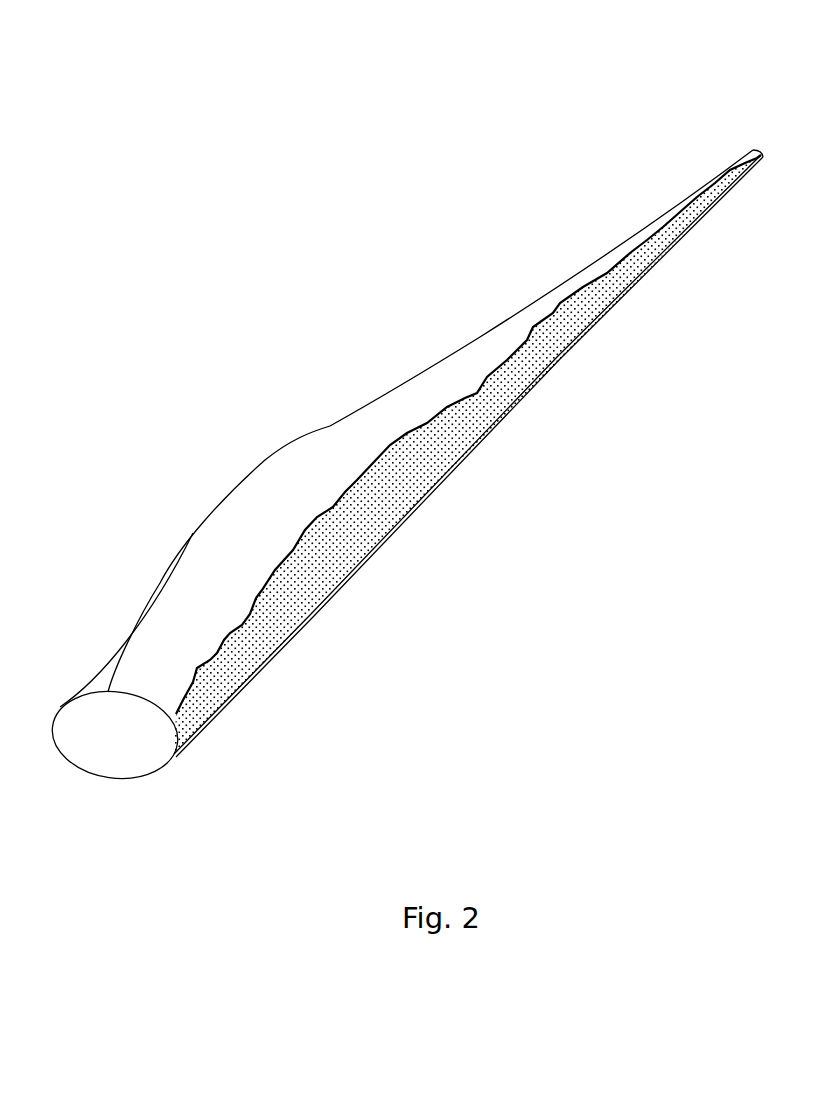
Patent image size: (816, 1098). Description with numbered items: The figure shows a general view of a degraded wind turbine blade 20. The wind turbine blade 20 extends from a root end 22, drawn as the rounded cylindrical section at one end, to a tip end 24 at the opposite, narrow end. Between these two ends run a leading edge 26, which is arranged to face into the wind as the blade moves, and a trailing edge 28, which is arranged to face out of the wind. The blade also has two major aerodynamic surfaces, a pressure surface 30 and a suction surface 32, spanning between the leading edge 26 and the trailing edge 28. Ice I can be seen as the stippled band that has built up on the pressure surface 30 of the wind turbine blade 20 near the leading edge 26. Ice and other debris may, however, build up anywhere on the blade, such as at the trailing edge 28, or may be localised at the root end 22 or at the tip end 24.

The wind turbine blade 20 is at (383, 402).
The root end 22 is at (105, 732).
The tip end 24 is at (760, 150).
The leading edge 26 is at (533, 395).
The trailing edge 28 is at (295, 443).
The pressure surface 30 is at (457, 367).
The suction surface 32 is at (118, 653).
The ice I is at (447, 463).